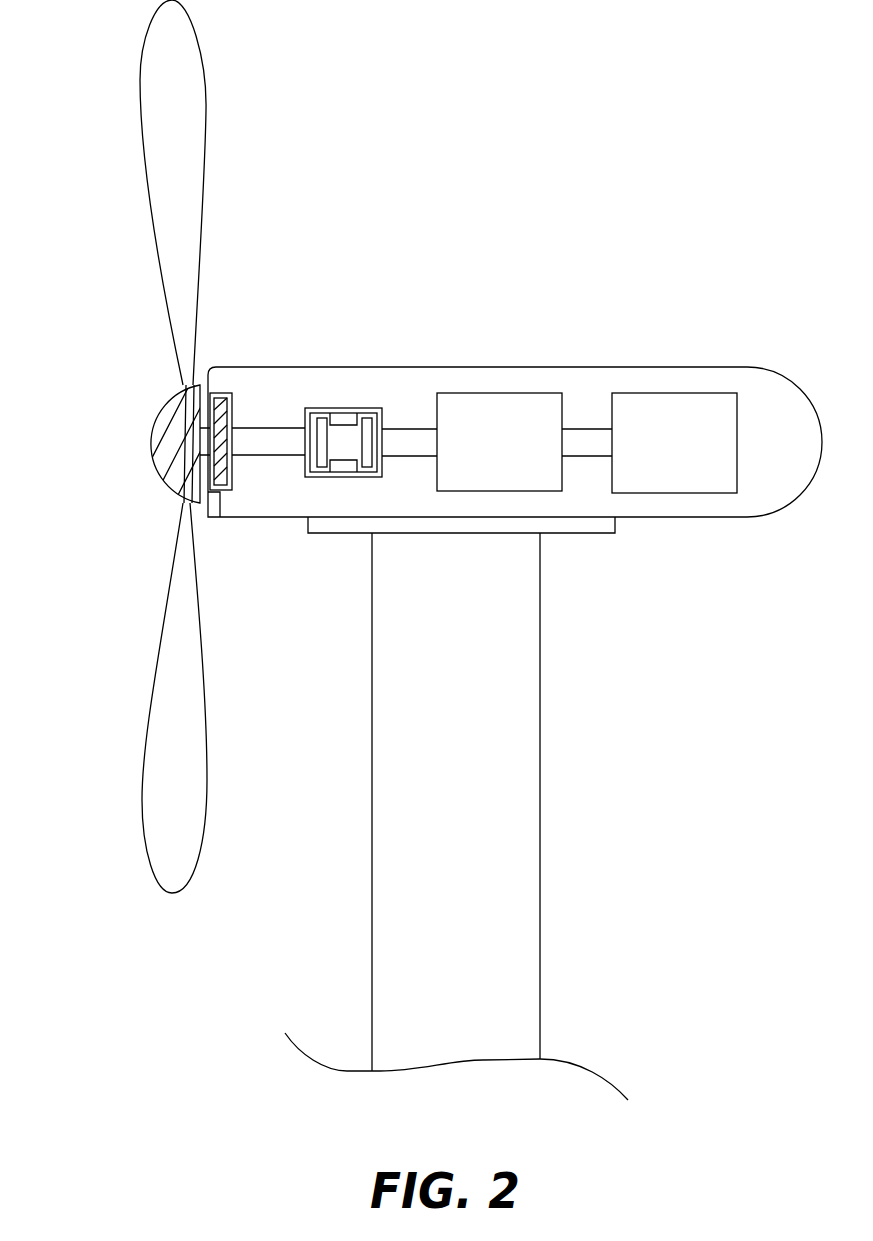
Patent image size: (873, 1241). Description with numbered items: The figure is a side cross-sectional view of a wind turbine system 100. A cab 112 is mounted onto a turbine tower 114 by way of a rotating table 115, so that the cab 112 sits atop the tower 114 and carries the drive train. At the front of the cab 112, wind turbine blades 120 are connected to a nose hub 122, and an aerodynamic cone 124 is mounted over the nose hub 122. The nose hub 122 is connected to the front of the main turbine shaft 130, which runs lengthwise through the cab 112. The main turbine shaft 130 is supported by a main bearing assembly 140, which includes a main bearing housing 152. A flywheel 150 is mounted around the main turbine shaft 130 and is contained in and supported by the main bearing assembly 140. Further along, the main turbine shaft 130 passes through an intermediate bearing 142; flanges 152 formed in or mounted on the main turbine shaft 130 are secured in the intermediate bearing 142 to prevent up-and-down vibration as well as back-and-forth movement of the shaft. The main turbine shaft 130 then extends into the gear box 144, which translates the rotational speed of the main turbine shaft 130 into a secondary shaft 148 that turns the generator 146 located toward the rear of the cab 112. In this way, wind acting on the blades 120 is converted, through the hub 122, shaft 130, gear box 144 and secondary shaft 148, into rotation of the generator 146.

The wind turbine system 100 is at (521, 306).
The cab 112 is at (550, 367).
The turbine tower 114 is at (517, 777).
The rotating table 115 is at (455, 523).
The wind turbine blades 120 is at (185, 142).
The nose hub 122 is at (197, 385).
The aerodynamic cone 124 is at (152, 440).
The main turbine shaft 130 is at (277, 438).
The main bearing assembly 140 is at (217, 492).
The intermediate bearing 142 is at (352, 412).
The gear box 144 is at (515, 477).
The generator 146 is at (707, 406).
The secondary shaft 148 is at (597, 447).
The flywheel 150 is at (225, 397).
The flanges 152 is at (316, 410).